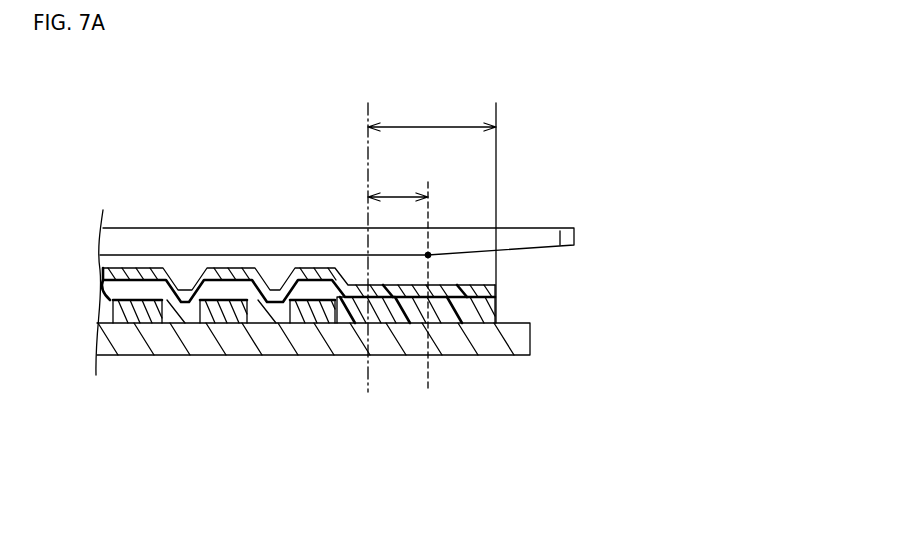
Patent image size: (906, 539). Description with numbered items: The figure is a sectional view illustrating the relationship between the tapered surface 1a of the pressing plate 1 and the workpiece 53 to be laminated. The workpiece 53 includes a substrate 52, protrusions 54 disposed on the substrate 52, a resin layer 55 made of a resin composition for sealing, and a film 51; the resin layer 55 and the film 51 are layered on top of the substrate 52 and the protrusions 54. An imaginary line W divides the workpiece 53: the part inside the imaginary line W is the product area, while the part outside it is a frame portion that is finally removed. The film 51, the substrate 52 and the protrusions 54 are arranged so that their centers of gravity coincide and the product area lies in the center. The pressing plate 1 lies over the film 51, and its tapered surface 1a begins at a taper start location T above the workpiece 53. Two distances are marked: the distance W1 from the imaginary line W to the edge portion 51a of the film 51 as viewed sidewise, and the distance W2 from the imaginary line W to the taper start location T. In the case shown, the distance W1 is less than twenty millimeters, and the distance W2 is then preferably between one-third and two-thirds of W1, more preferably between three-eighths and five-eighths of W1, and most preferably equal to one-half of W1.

The pressing plate 1 is at (237, 237).
The tapered surface 1a is at (557, 247).
The taper start location T is at (428, 255).
The film 51 is at (147, 267).
The edge portion of the film 51a is at (495, 288).
The substrate 52 is at (508, 345).
The workpiece 53 is at (129, 393).
The protrusions 54 is at (218, 312).
The resin layer 55 is at (395, 312).
The imaginary line W is at (362, 378).
The distance from imaginary line to edge portion of film W1 is at (580, 202).
The distance from imaginary line to taper start location W2 is at (398, 273).